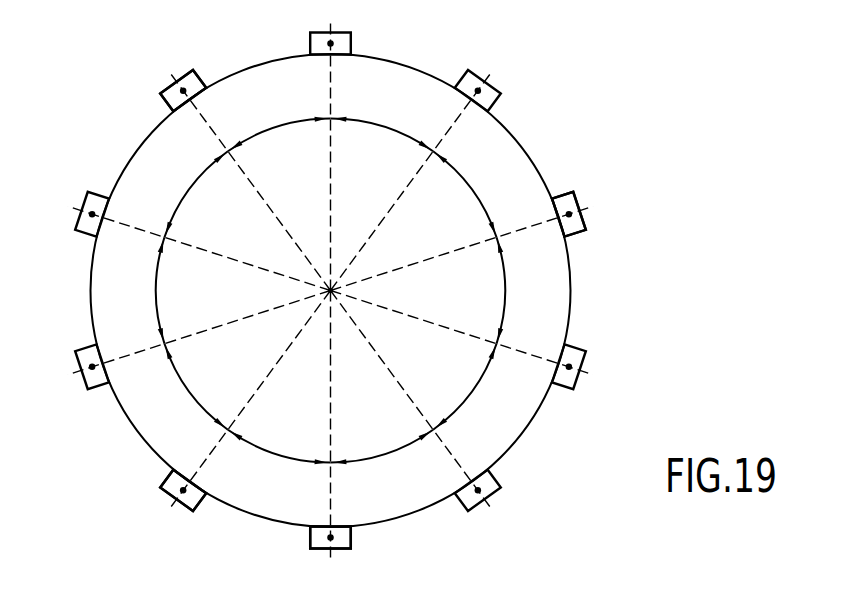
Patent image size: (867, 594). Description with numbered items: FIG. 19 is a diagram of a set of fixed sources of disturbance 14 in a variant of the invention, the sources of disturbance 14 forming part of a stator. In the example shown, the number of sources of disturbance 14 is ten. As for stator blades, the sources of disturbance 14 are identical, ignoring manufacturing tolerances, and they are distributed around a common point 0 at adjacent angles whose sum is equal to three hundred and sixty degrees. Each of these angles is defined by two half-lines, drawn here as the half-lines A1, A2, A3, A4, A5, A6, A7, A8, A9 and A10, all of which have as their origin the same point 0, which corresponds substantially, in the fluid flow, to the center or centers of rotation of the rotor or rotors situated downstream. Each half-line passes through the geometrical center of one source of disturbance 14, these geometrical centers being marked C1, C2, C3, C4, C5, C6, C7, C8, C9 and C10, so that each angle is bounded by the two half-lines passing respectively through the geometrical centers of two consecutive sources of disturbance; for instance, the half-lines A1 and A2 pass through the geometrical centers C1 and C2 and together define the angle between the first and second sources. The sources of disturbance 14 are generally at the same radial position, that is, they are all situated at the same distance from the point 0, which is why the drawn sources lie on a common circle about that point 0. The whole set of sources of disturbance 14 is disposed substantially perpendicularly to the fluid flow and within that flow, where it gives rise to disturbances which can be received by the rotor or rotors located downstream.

The half-line A1 is at (330, 26).
The half-line A2 is at (494, 74).
The half-line A3 is at (593, 206).
The half-line A4 is at (588, 376).
The half-line A5 is at (487, 505).
The half-line A6 is at (327, 562).
The half-line A7 is at (168, 507).
The half-line A8 is at (74, 373).
The half-line A9 is at (76, 205).
The half-line A10 is at (171, 71).
The geometrical center C1 is at (332, 43).
The geometrical center C2 is at (481, 92).
The geometrical center C3 is at (572, 216).
The geometrical center C4 is at (570, 368).
The geometrical center C5 is at (478, 491).
The geometrical center C6 is at (332, 540).
The geometrical center C7 is at (187, 492).
The geometrical center C8 is at (94, 370).
The geometrical center C9 is at (93, 215).
The geometrical center C10 is at (187, 90).
The source of disturbance 14 is at (583, 221).
The point O 0 is at (331, 289).